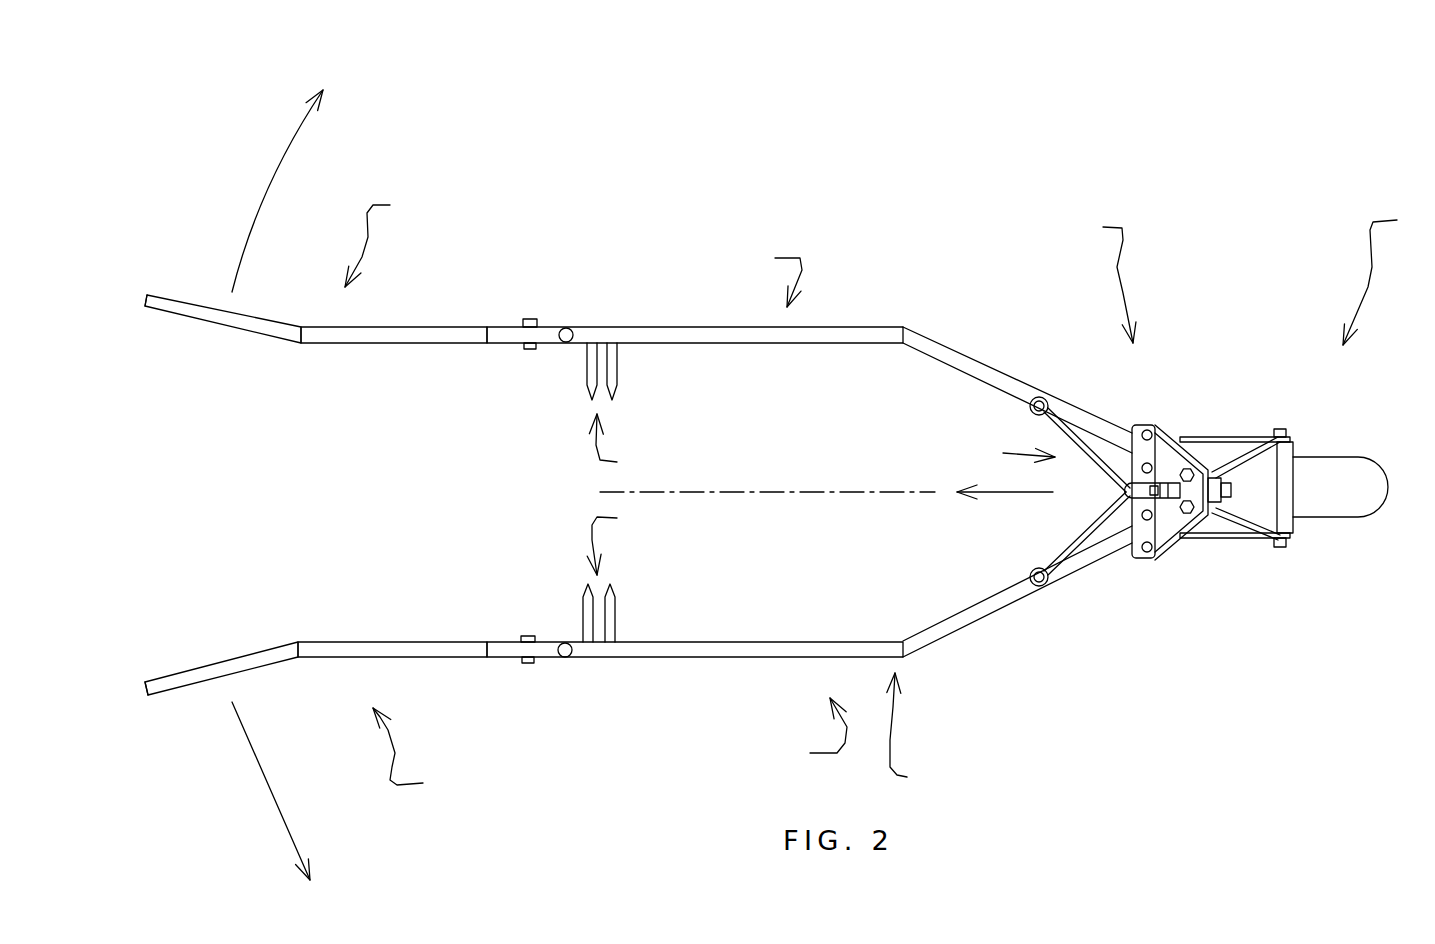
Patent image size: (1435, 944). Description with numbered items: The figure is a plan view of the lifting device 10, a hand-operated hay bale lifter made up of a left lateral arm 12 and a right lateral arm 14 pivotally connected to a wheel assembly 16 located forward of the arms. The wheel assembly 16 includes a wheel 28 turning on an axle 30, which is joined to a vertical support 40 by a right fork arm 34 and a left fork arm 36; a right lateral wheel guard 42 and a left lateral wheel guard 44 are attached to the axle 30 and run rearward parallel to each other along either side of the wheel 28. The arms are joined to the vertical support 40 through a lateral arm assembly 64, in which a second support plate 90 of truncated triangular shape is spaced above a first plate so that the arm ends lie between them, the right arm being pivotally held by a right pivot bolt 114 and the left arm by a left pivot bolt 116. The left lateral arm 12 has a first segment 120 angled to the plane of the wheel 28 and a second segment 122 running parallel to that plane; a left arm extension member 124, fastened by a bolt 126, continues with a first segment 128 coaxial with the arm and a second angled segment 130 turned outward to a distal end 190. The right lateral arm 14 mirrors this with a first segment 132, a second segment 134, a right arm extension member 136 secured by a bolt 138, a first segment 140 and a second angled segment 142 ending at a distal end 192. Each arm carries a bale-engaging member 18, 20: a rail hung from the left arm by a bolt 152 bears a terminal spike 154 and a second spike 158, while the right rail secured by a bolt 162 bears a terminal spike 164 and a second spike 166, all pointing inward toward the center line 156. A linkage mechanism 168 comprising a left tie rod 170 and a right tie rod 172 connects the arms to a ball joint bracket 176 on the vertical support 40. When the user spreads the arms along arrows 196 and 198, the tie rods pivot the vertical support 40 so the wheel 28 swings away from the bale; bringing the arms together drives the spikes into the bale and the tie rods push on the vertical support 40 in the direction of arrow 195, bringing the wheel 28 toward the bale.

The lifting device 10 is at (915, 731).
The left lateral arm 12 is at (772, 275).
The right lateral arm 14 is at (812, 733).
The wheel assembly 16 is at (1389, 275).
The bale-engaging member 18 is at (621, 445).
The bale-engaging member 20 is at (620, 539).
The wheel 28 is at (1364, 521).
The axle 30 is at (1329, 469).
The right fork arm 34 is at (1271, 578).
The left fork arm 36 is at (1314, 400).
The vertical support 40 is at (1203, 459).
The right lateral wheel guard 42 is at (1256, 578).
The left lateral wheel guard 44 is at (1271, 401).
The lateral arm assembly 64 is at (1138, 386).
The second support plate 90 is at (1118, 566).
The right pivot bolt 114 is at (1158, 604).
The left pivot bolt 116 is at (1238, 362).
The first segment 120 is at (1017, 359).
The second segment 122 is at (695, 285).
The left arm extension member 124 is at (392, 237).
The bolt 126 is at (478, 363).
The first segment 128 is at (394, 290).
The second angled segment 130 is at (241, 278).
The first segment 132 is at (1017, 621).
The second segment 134 is at (695, 705).
The right arm extension member 136 is at (419, 753).
The bolt 138 is at (477, 609).
The first segment 140 is at (397, 693).
The second angled segment 142 is at (248, 700).
The bolt 152 is at (590, 265).
The terminal spike 154 is at (541, 397).
The center line 156 is at (767, 471).
The second spike 158 is at (658, 383).
The bolt 162 is at (588, 691).
The terminal spike 164 is at (538, 581).
The second spike 166 is at (657, 605).
The linkage mechanism 168 is at (995, 438).
The left tie rod 170 is at (1074, 400).
The right tie rod 172 is at (1080, 577).
The ball joint bracket 176 is at (1101, 512).
The distal end 190 is at (185, 257).
The distal end 192 is at (189, 739).
The arrow 195 is at (990, 526).
The arrow 196 is at (249, 191).
The arrow 198 is at (247, 791).